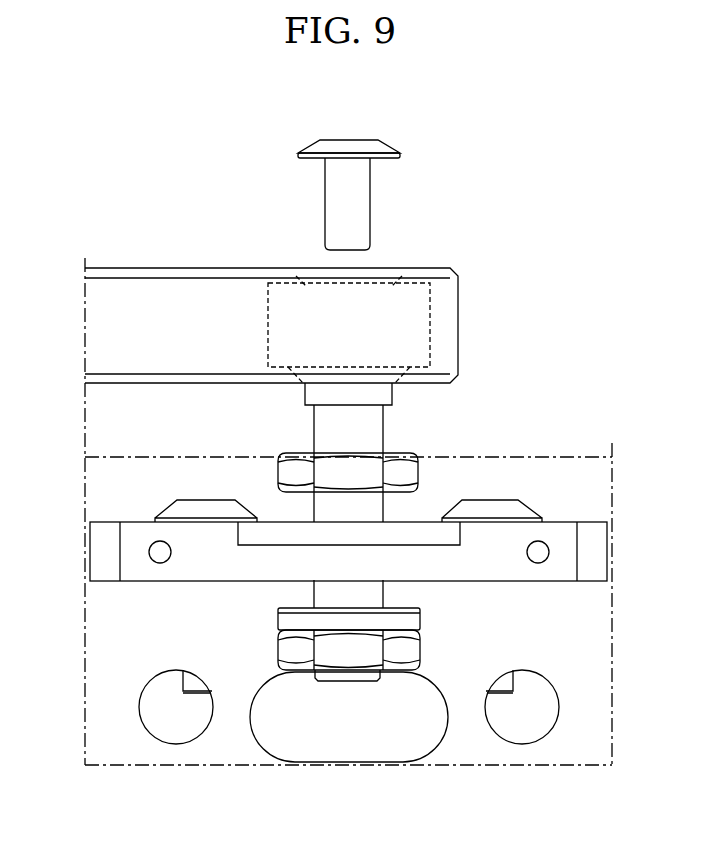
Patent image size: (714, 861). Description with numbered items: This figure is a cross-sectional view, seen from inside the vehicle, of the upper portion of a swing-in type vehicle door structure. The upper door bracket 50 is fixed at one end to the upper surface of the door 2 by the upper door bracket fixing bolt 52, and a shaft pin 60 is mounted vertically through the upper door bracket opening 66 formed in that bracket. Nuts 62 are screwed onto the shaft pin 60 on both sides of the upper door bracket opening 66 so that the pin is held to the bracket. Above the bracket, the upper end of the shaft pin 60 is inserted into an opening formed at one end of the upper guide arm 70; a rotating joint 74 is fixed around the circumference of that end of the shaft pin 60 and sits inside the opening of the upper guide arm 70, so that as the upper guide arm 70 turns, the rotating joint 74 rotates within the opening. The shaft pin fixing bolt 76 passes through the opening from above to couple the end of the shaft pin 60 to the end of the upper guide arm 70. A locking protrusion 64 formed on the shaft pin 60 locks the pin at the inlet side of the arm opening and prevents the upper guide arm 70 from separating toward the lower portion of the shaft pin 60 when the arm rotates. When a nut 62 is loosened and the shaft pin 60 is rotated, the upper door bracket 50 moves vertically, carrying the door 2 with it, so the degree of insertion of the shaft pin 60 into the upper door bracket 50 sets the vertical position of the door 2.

The door 2 is at (575, 630).
The upper door bracket 50 is at (570, 552).
The upper door bracket fixing bolt 52 is at (517, 510).
The shaft pin 60 is at (377, 430).
The nut 62 is at (410, 475).
The locking protrusion 64 is at (383, 395).
The upper door bracket opening 66 is at (347, 521).
The upper guide arm 70 is at (188, 287).
The rotating joint 74 is at (420, 320).
The shaft pin fixing bolt 76 is at (363, 200).